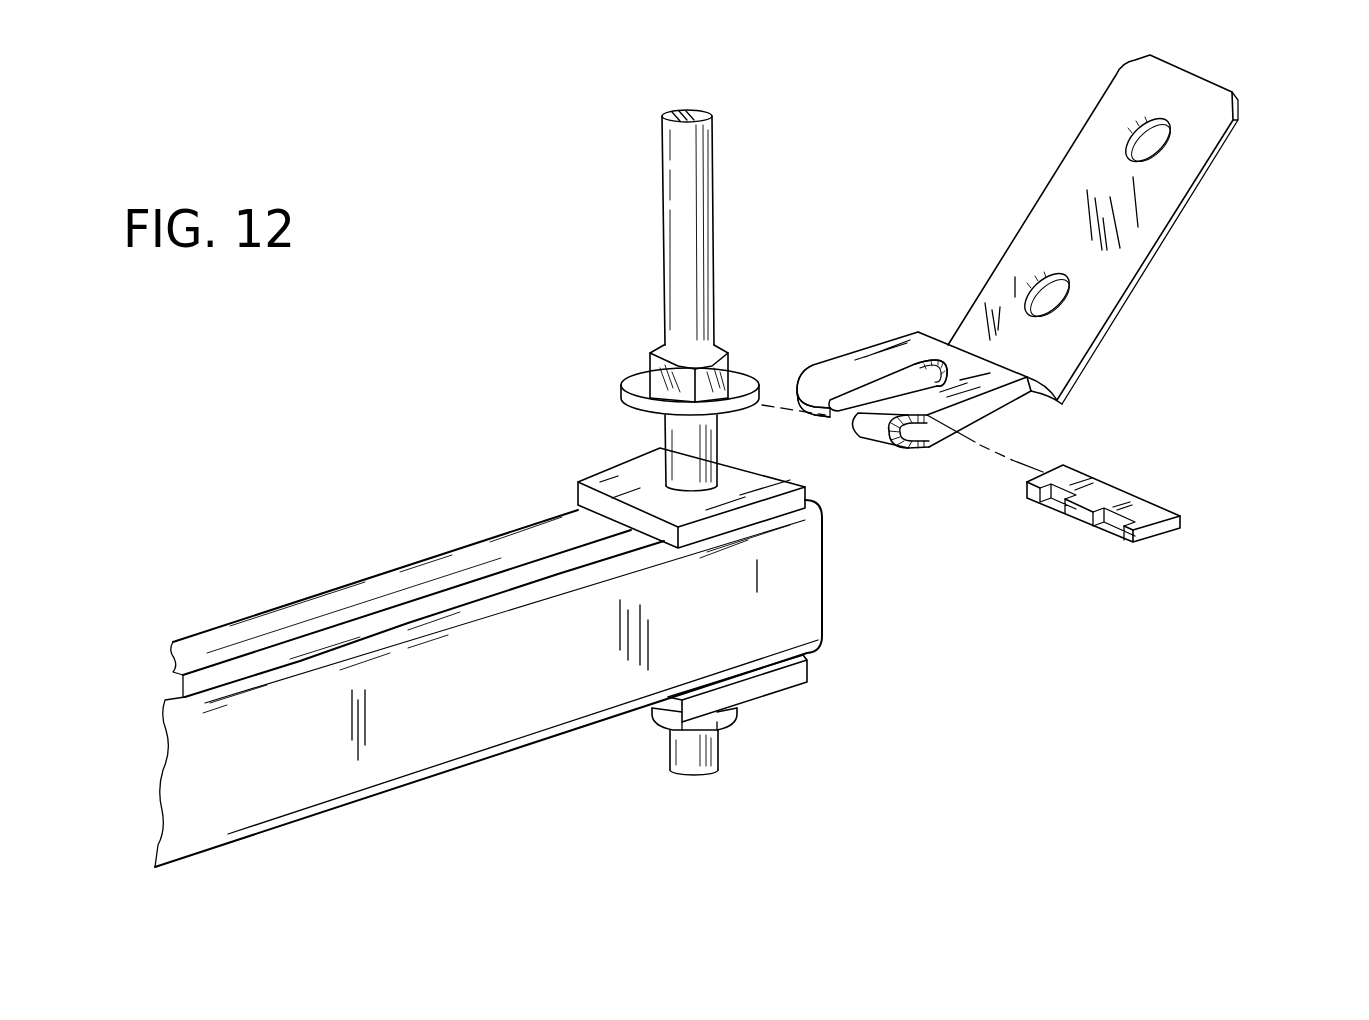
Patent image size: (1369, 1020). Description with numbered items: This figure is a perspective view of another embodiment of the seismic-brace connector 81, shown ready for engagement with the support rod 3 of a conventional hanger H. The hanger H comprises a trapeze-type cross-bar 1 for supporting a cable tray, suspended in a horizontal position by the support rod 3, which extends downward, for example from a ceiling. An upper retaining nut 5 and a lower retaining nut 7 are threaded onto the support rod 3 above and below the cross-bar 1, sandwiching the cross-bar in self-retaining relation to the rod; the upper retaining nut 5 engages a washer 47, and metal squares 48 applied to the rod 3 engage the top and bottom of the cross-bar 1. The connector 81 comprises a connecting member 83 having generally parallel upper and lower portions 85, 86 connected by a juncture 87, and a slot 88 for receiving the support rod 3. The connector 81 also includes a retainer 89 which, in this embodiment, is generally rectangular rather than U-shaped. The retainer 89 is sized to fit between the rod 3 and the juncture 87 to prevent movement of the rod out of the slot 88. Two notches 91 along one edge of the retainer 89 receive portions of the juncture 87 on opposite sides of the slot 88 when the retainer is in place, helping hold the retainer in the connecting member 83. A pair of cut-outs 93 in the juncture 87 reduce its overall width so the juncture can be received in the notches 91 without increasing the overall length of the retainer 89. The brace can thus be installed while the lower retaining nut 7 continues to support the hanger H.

The cross-bar 1 is at (421, 756).
The support rod 3 is at (682, 220).
The upper retaining nut 5 is at (725, 355).
The lower retaining nut 7 is at (735, 718).
The washer 47 is at (638, 392).
The metal squares 48 is at (603, 482).
The connector 81 is at (1049, 288).
The connecting member 83 is at (1242, 141).
The upper portion 85 is at (838, 368).
The lower portion 86 is at (1052, 407).
The juncture 87 is at (825, 418).
The slot 88 is at (918, 334).
The retainer 89 is at (1119, 516).
The notches 91 is at (1110, 527).
The cut-outs 93 is at (798, 380).
The hanger H is at (404, 484).